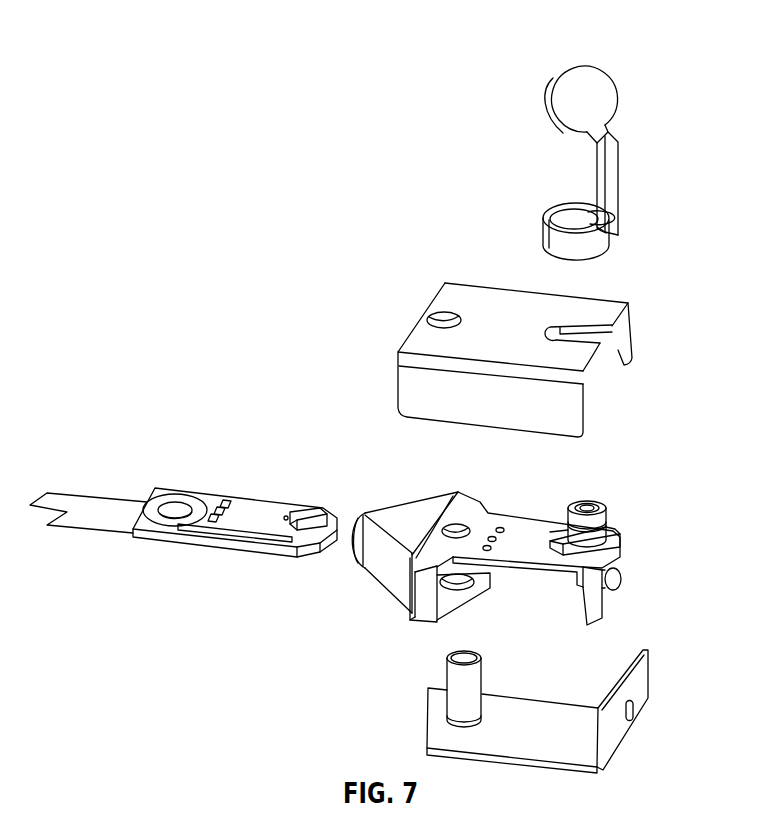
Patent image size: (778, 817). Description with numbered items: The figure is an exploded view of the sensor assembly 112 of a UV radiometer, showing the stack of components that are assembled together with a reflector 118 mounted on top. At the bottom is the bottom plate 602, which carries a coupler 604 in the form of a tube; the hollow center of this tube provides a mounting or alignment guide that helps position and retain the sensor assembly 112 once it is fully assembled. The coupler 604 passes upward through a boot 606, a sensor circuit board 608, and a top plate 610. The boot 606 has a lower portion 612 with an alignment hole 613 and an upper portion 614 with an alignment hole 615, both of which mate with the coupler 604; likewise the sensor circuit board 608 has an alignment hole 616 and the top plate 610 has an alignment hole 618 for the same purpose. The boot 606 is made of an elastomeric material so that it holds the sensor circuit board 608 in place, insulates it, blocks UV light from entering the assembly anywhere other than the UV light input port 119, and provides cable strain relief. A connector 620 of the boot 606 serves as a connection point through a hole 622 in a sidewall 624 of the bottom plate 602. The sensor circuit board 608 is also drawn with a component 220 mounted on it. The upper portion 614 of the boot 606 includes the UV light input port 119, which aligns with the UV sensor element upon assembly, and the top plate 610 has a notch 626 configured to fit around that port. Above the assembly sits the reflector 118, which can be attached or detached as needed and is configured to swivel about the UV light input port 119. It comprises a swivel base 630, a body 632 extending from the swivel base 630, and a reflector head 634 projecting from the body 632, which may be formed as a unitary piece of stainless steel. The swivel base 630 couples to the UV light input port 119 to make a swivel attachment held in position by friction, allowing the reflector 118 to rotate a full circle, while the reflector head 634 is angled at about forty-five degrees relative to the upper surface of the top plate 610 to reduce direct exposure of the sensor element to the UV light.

The sensor assembly 112 is at (304, 85).
The reflector 118 is at (626, 110).
The UV light input port 119 is at (568, 522).
The electrical component 220 is at (314, 514).
The bottom plate 602 is at (570, 681).
The coupler 604 is at (447, 712).
The boot 606 is at (402, 527).
The sensor circuit board 608 is at (258, 503).
The top plate 610 is at (505, 338).
The lower portion 612 is at (440, 615).
The alignment hole 613 is at (470, 588).
The upper portion 614 is at (553, 541).
The alignment hole 615 is at (455, 527).
The alignment hole 616 is at (184, 494).
The alignment hole 618 is at (438, 320).
The connector 620 is at (624, 579).
The hole 622 is at (634, 713).
The sidewall 624 is at (643, 652).
The notch 626 is at (608, 340).
The swivel base 630 is at (550, 216).
The body 632 is at (620, 170).
The reflector head 634 is at (565, 88).